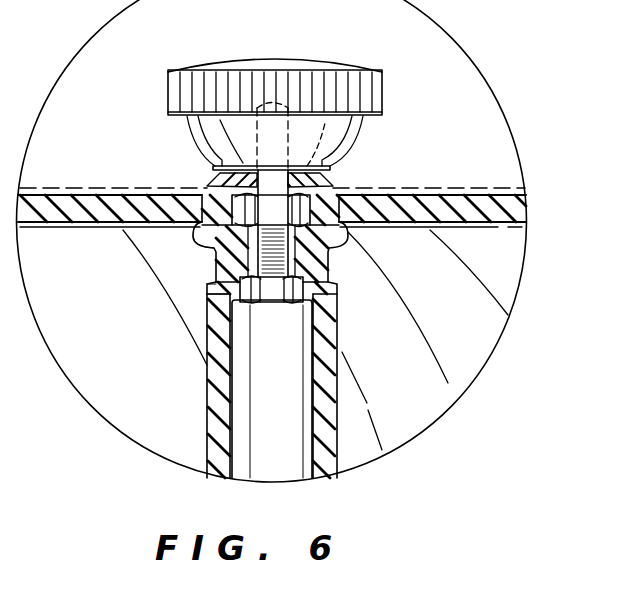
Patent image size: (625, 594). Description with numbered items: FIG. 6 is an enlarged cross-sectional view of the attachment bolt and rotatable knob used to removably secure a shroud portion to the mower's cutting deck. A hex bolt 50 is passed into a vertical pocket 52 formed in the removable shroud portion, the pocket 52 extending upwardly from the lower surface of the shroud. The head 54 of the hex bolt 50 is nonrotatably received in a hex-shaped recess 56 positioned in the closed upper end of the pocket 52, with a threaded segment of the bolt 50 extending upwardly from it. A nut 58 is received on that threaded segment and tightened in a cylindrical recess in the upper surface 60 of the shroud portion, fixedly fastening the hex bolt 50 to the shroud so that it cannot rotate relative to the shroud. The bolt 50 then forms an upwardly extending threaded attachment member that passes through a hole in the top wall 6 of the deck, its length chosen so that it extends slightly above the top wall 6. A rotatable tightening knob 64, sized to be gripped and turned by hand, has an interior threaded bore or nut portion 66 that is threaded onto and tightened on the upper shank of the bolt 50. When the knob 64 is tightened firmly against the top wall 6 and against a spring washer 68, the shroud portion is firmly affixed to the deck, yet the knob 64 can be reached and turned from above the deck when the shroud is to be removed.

The top wall 6 is at (458, 187).
The hex bolt 50 is at (213, 248).
The vertical pocket 52 is at (273, 406).
The head 54 is at (312, 288).
The hex-shaped recess 56 is at (216, 290).
The nut 58 is at (348, 233).
The upper surface 60 is at (105, 190).
The rotatable tightening knob 64 is at (293, 58).
The interior threaded bore or nut portion 66 is at (288, 141).
The spring washer 68 is at (213, 180).